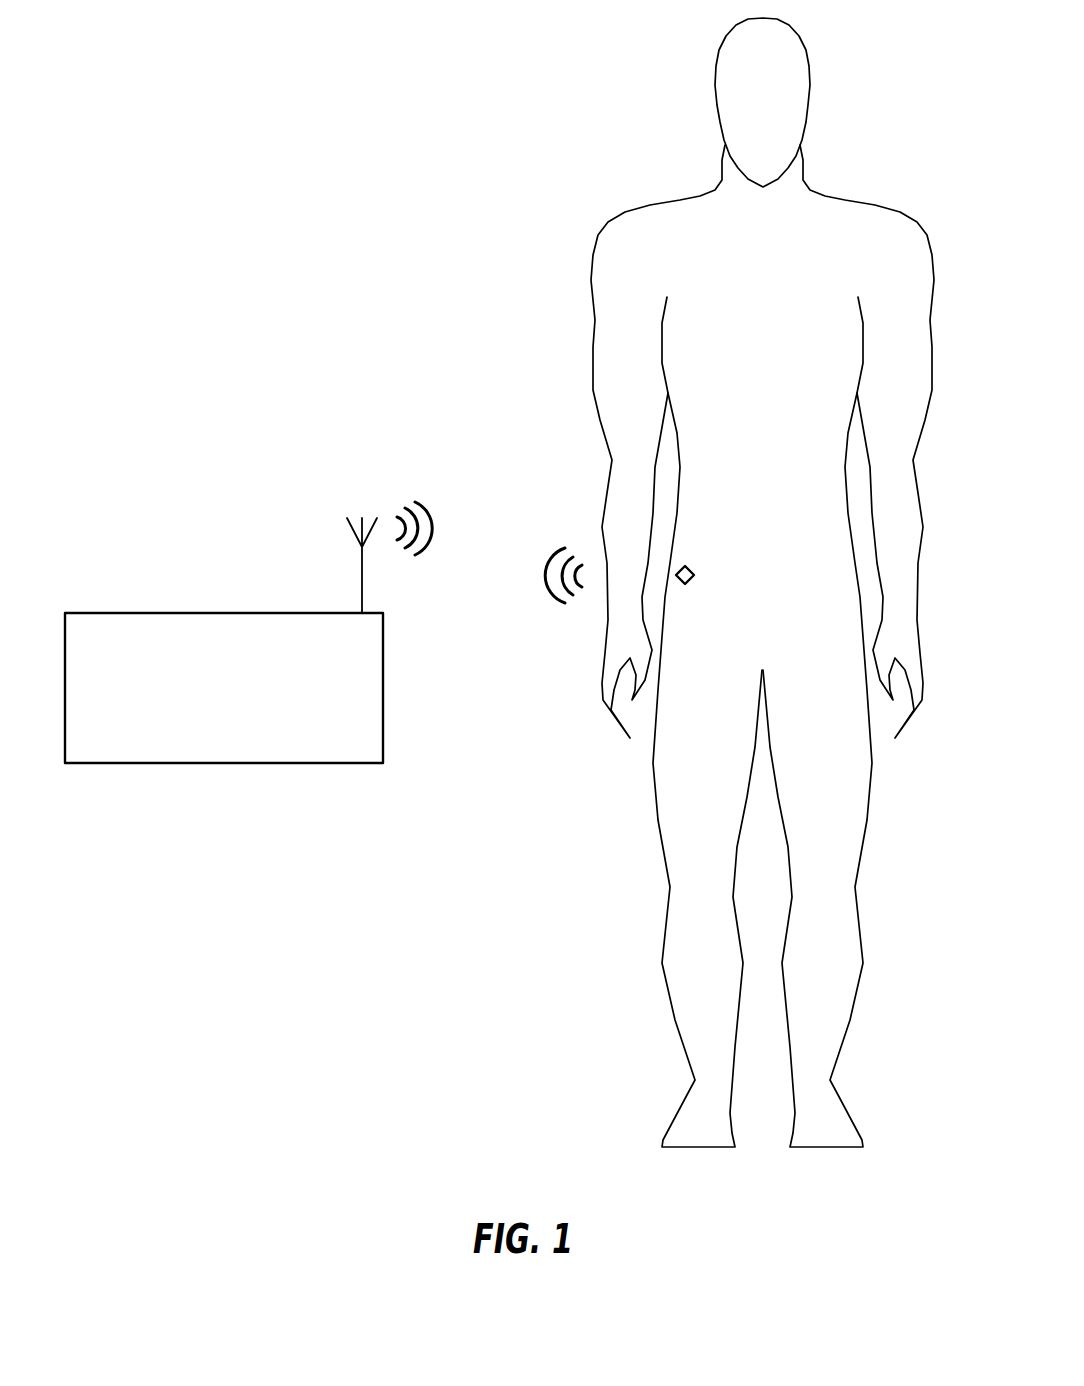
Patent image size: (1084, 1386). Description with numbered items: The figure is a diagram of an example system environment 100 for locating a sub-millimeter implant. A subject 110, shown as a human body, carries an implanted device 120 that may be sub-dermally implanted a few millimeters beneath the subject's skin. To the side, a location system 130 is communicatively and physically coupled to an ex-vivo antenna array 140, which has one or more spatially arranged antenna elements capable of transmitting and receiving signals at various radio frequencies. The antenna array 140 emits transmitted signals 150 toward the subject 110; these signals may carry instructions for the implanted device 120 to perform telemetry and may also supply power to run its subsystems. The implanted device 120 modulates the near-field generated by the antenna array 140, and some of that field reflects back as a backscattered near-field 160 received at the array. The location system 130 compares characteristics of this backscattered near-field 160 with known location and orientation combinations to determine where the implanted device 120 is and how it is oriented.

The system environment 100 is at (302, 99).
The subject 110 is at (647, 183).
The implanted device 120 is at (685, 557).
The location system 130 is at (245, 714).
The antenna array 140 is at (362, 499).
The transmitted signals 150 is at (402, 483).
The backscattered near-field 160 is at (558, 528).